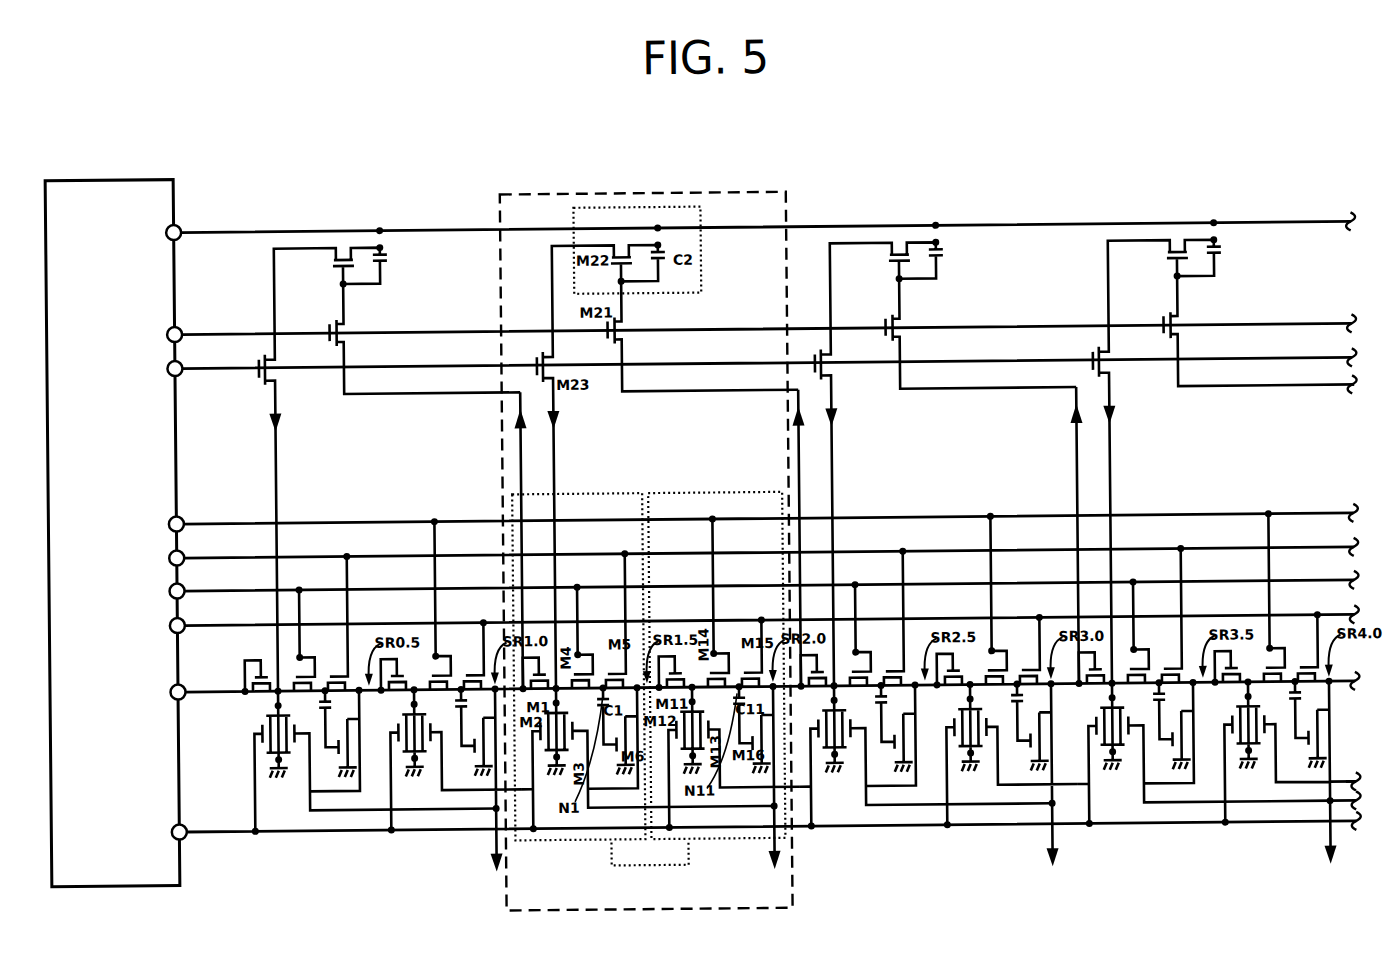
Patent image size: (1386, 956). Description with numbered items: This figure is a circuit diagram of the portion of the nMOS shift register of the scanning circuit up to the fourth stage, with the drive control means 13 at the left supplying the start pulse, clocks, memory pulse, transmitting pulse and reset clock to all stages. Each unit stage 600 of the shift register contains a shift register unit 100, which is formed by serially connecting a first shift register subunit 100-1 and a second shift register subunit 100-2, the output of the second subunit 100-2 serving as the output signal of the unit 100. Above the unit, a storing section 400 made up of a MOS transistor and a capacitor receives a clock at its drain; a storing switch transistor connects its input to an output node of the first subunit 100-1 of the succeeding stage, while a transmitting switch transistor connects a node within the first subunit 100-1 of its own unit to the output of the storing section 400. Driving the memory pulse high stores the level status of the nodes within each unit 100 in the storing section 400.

The drive control means 13 is at (106, 176).
The shift register unit 100 is at (650, 872).
The first shift register subunit 100-1 is at (584, 494).
The second shift register subunit 100-2 is at (696, 494).
The storing section 400 is at (678, 208).
The unit stage of the shift register 600 is at (547, 194).